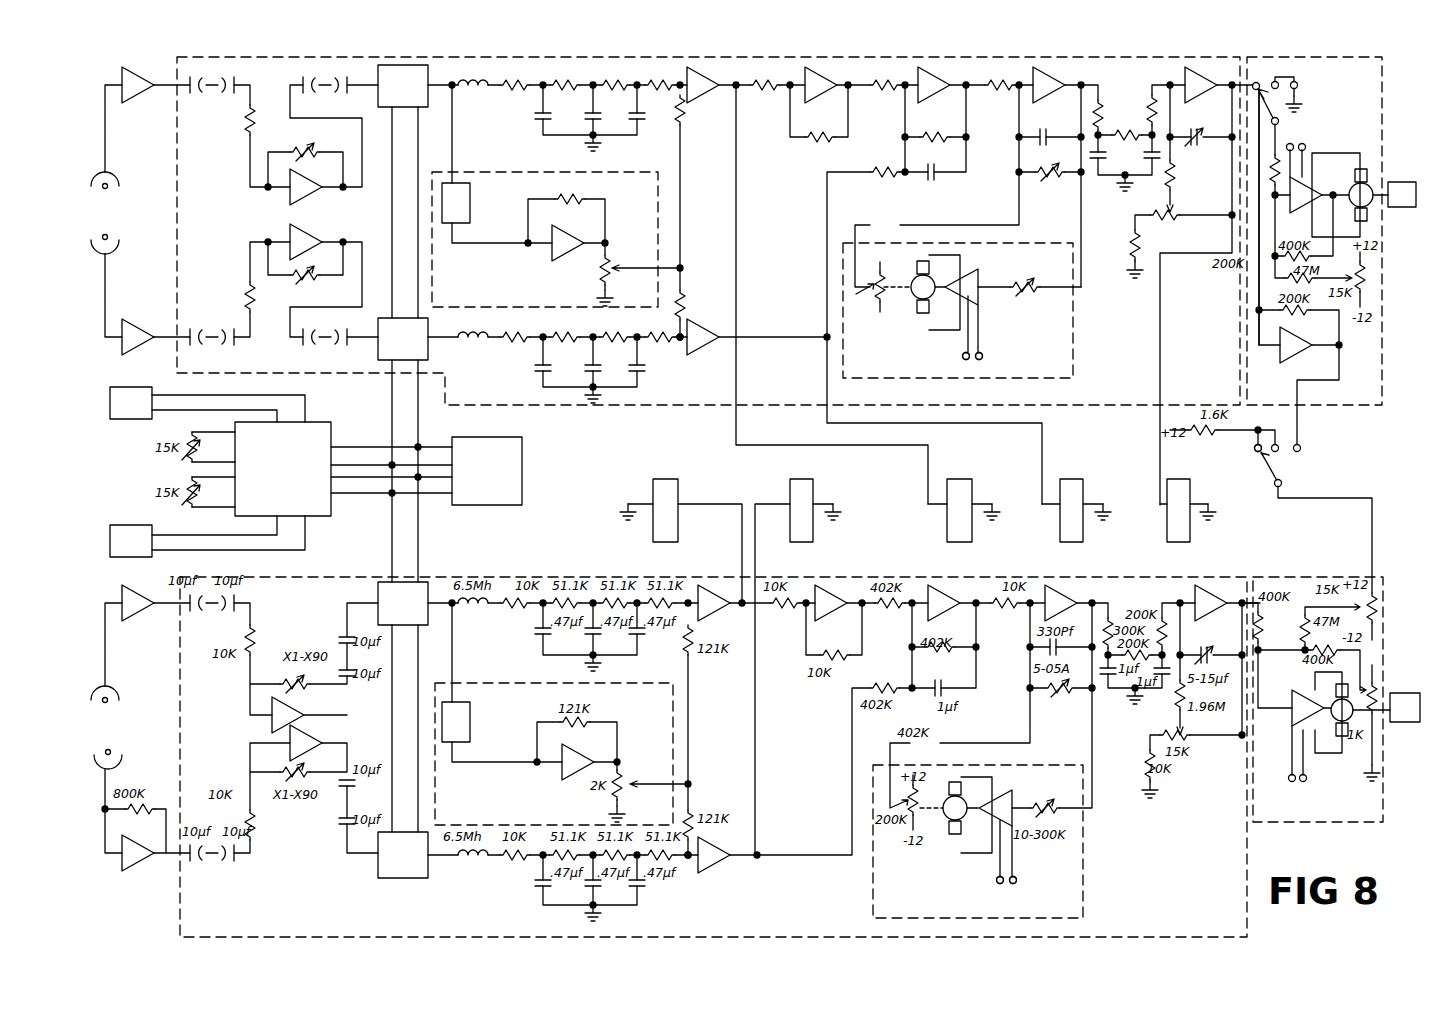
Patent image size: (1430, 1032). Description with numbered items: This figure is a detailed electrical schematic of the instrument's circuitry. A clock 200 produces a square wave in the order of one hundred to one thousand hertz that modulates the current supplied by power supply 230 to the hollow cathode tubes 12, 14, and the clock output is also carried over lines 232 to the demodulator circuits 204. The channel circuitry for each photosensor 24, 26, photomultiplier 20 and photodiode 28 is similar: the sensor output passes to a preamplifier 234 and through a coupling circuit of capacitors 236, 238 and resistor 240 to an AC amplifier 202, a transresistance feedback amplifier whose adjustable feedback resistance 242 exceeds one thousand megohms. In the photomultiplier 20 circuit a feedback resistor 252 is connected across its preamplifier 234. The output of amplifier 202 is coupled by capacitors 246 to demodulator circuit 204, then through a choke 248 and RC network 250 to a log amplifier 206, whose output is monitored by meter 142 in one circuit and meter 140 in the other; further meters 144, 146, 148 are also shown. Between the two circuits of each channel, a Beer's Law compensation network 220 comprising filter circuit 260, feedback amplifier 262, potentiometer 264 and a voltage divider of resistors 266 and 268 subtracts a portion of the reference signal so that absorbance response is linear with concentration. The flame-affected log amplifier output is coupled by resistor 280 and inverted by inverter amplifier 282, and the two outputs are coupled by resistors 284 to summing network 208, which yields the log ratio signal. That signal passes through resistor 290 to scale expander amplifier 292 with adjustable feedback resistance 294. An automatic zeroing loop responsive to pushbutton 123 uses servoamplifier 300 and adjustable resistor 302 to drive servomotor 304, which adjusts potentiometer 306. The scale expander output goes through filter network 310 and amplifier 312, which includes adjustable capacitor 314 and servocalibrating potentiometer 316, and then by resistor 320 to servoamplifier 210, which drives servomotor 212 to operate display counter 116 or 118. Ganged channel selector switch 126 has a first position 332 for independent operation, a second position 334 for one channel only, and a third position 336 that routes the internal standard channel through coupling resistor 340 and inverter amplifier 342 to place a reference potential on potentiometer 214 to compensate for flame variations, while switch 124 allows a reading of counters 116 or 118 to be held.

The hollow cathode tube 12 is at (131, 541).
The hollow cathode tube 14 is at (131, 403).
The photomultiplier 20 is at (122, 764).
The photosensor 24 is at (120, 249).
The photosensor 26 is at (114, 176).
The photodiode 28 is at (122, 705).
The display counter 116 is at (1400, 692).
The display counter 118 is at (1397, 181).
The pushbutton 123 is at (967, 363).
The switch 124 is at (1310, 142).
The ganged channel selector switch 126 is at (1292, 102).
The meter 140 is at (813, 480).
The meter 142 is at (678, 480).
The meter 144 is at (1080, 480).
The meter 146 is at (970, 480).
The meter 148 is at (1188, 480).
The clock 200 is at (487, 471).
The AC amplifier 202 is at (292, 195).
The demodulator circuit 204 is at (403, 471).
The log amplifier 206 is at (704, 80).
The summing network 208 is at (930, 80).
The servoamplifier 210 is at (1310, 205).
The servomotor 212 is at (1352, 190).
The potentiometer 214 is at (1370, 756).
The Beer's Law compensation network 220 is at (660, 204).
The power supply 230 is at (259, 469).
The lines 232 is at (395, 418).
The preamplifier 234 is at (142, 77).
The capacitor 236 is at (191, 96).
The capacitor 238 is at (233, 96).
The resistor 240 is at (246, 140).
The feedback resistance 242 is at (298, 150).
The capacitors 246 is at (304, 77).
The choke 248 is at (478, 96).
The RC network 250 is at (528, 128).
The feedback resistor 252 is at (158, 814).
The filter circuit 260 is at (471, 202).
The feedback amplifier 262 is at (562, 256).
The potentiometer 264 is at (610, 262).
The resistor 266 is at (684, 138).
The resistor 268 is at (684, 295).
The resistor 280 is at (762, 96).
The inverter amplifier 282 is at (816, 80).
The resistors 284 is at (880, 96).
The resistor 290 is at (994, 96).
The scale expander amplifier 292 is at (1042, 79).
The feedback resistance 294 is at (1057, 183).
The servoamplifier 300 is at (972, 277).
The adjustable resistor 302 is at (1032, 292).
The servomotor 304 is at (918, 301).
The potentiometer 306 is at (878, 316).
The filter network 310 is at (1116, 77).
The amplifier 312 is at (1184, 79).
The adjustable capacitor 314 is at (1192, 133).
The servocalibrating potentiometer 316 is at (1182, 219).
The resistor 320 is at (1278, 152).
The first position 332 is at (1254, 447).
The second position 334 is at (1280, 457).
The third position 336 is at (1302, 447).
The coupling resistor 340 is at (1255, 264).
The inverter amplifier 342 is at (1298, 356).